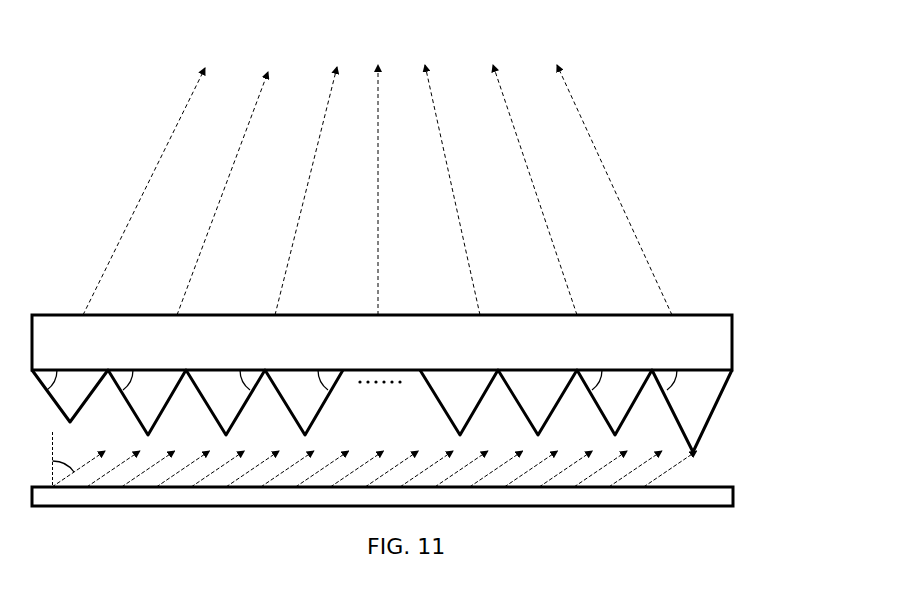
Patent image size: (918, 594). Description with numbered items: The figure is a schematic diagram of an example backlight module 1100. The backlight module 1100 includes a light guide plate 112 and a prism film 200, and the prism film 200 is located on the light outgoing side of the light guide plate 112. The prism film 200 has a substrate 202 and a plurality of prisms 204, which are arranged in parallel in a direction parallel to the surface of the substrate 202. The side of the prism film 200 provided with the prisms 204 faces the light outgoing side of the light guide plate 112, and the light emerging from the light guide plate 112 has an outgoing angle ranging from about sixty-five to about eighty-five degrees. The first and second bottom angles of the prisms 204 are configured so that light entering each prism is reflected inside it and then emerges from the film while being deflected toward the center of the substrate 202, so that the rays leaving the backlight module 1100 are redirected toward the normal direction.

The backlight module 1100 is at (97, 260).
The prism film 200 is at (715, 398).
The substrate 202 is at (688, 322).
The prisms 204 is at (702, 410).
The light guide plate 112 is at (708, 500).